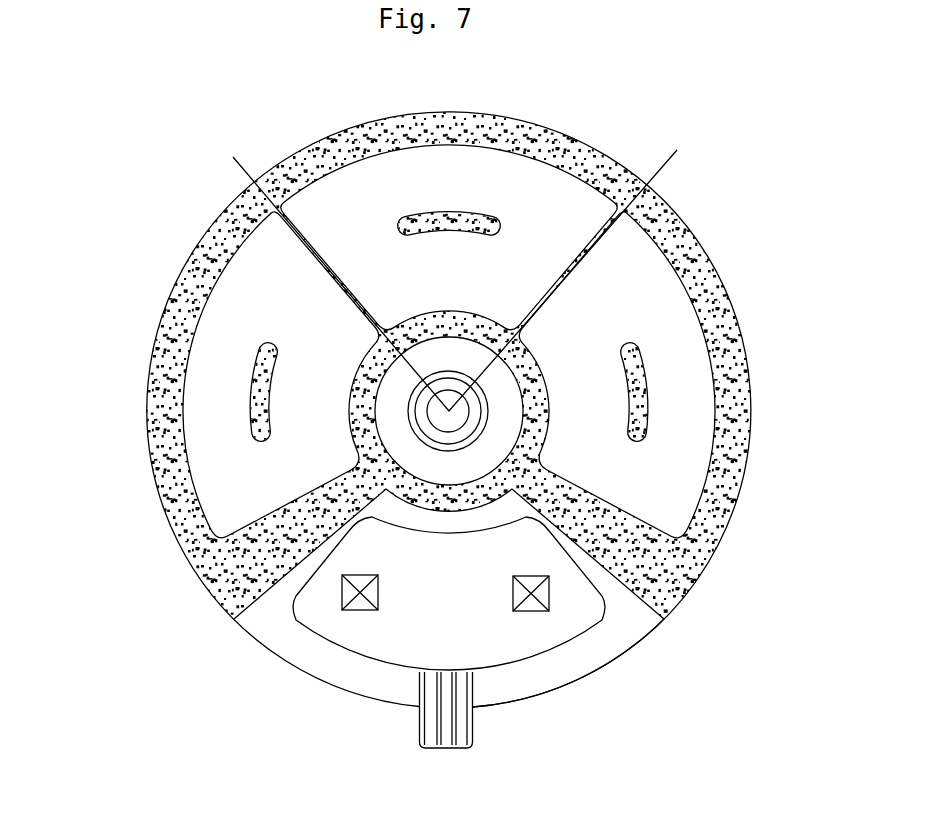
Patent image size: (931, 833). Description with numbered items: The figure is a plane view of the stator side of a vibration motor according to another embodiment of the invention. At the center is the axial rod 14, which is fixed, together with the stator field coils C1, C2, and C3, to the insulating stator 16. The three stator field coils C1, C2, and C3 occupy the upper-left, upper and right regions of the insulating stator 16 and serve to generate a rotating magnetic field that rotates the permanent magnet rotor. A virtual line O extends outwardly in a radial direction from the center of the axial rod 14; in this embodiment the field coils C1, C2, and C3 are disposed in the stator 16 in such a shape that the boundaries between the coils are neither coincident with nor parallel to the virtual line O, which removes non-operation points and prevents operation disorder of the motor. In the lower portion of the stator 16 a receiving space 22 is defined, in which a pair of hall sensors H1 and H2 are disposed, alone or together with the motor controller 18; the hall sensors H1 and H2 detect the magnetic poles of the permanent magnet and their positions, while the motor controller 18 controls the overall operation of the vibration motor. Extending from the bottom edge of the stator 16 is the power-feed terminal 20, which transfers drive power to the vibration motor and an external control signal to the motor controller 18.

The axial rod 14 is at (432, 402).
The insulating stator 16 is at (238, 572).
The motor controller 18 is at (530, 627).
The power-feed terminal 20 is at (460, 725).
The receiving space 22 is at (380, 680).
The hall sensor H1 is at (342, 604).
The hall sensor H2 is at (533, 605).
The stator field coil C1 is at (195, 412).
The stator field coil C2 is at (333, 190).
The stator field coil C3 is at (690, 306).
The virtual line O is at (454, 255).